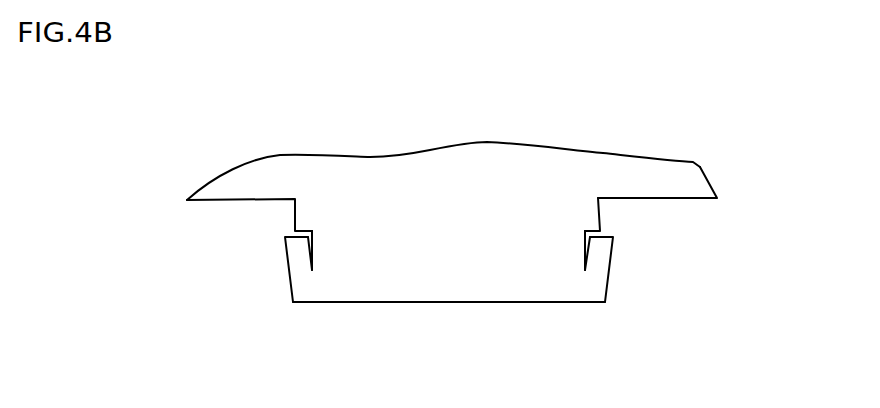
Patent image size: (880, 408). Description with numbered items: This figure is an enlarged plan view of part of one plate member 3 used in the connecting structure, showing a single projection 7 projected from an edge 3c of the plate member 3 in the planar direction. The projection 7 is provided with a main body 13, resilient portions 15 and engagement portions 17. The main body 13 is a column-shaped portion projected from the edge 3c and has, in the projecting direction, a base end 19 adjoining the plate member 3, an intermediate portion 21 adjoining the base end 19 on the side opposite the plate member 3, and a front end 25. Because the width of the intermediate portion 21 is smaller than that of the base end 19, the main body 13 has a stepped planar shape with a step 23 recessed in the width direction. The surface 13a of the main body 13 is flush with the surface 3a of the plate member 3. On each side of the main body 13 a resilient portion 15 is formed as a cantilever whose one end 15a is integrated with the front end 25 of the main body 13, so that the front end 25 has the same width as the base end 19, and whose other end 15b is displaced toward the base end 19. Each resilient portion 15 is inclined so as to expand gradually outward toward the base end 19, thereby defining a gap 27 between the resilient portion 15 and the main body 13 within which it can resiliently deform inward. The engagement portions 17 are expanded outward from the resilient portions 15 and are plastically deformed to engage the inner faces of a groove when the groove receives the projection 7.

The plate member 3 is at (522, 143).
The surface of the plate member 3a is at (461, 158).
The edge of the plate member 3c is at (700, 202).
The projection 7 is at (402, 302).
The main body 13 is at (460, 273).
The surface of the main body 13a is at (488, 291).
The resilient portion 15 is at (290, 260).
The one end of the resilient portion 15a is at (308, 303).
The other end of the resilient portion 15b is at (283, 236).
The engagement portion 17 is at (283, 253).
The base end 19 is at (295, 217).
The intermediate portion 21 is at (337, 247).
The step 23 is at (312, 240).
The front end 25 is at (367, 303).
The gap 27 is at (311, 230).